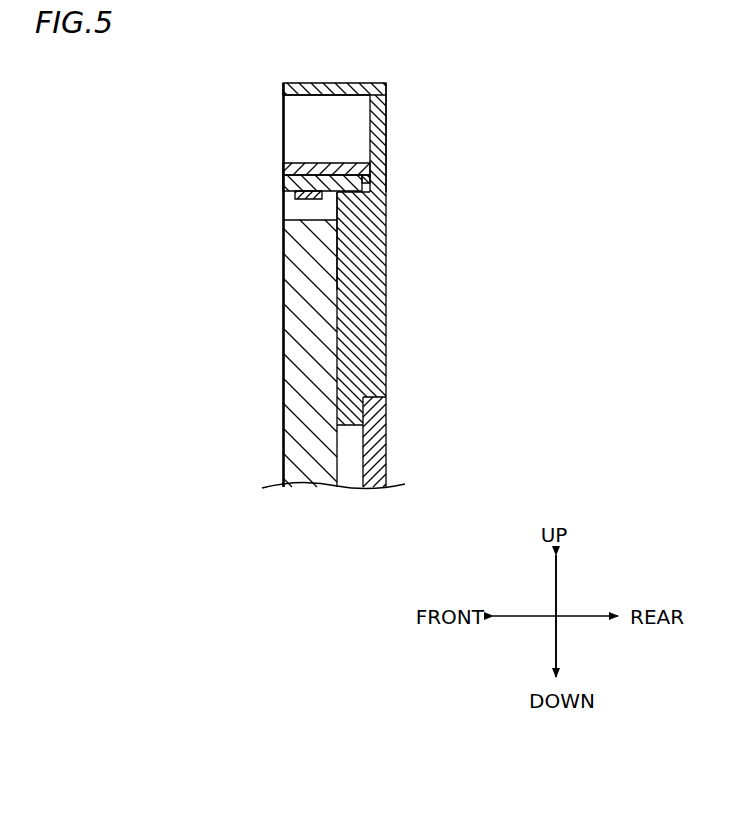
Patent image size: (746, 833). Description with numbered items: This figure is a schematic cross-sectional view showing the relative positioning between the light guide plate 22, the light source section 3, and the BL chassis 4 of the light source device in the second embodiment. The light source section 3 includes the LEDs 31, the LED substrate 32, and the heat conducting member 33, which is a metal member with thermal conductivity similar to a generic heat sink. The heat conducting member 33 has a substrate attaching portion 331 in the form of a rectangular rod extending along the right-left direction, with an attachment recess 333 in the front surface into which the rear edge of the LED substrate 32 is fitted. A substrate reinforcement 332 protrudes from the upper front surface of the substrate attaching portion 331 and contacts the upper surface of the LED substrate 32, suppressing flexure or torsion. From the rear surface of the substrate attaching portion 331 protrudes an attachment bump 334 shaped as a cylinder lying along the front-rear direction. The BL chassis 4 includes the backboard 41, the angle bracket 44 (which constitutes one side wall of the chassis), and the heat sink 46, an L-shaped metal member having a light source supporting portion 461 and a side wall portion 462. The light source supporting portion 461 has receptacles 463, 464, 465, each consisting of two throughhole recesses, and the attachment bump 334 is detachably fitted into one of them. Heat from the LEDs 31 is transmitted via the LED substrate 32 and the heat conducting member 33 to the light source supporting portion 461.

The light source section 3 is at (327, 229).
The LED 31 is at (290, 200).
The LED substrate 32 is at (283, 188).
The heat conducting member 33 is at (327, 229).
The substrate attaching portion 331 is at (337, 262).
The substrate reinforcement 332 is at (283, 153).
The attachment recess 333 is at (338, 213).
The attachment bump 334 is at (365, 178).
The BL chassis 4 is at (427, 327).
The backboard 41 is at (387, 422).
The angle bracket 44 is at (295, 120).
The heat sink 46 is at (364, 263).
The light source supporting portion 461 is at (439, 143).
The side wall portion 462 is at (320, 83).
The receptacle 463 is at (283, 100).
The receptacle 464 is at (370, 142).
The receptacle 465 is at (372, 190).
The light guide plate 22 is at (295, 350).